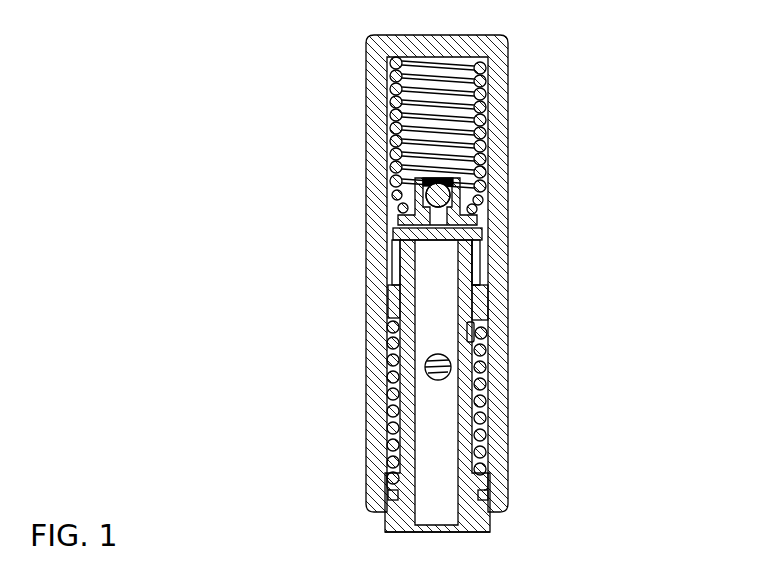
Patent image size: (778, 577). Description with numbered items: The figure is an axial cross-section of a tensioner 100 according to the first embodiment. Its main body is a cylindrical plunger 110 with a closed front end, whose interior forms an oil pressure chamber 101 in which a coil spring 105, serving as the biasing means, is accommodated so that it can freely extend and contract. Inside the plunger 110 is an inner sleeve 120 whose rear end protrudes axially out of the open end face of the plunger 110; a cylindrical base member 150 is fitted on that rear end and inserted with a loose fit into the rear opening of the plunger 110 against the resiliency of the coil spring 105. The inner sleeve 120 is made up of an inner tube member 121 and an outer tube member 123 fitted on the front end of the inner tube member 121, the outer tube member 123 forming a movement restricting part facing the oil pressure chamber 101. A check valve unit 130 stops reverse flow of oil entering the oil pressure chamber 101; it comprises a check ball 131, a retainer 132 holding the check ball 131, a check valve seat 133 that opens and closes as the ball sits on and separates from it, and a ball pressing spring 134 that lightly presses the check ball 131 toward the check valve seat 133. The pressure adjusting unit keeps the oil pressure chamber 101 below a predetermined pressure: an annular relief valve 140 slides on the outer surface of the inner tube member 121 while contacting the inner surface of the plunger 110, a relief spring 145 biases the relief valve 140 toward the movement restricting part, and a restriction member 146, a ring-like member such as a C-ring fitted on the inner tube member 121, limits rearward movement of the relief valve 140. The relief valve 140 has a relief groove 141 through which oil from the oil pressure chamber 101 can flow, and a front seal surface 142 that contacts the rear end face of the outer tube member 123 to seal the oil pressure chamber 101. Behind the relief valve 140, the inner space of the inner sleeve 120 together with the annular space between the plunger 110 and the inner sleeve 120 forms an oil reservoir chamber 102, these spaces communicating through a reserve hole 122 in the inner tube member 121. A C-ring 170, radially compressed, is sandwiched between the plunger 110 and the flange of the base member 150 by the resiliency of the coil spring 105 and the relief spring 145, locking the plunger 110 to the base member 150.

The tensioner 100 is at (346, 70).
The oil pressure chamber 101 is at (404, 148).
The oil reservoir chamber 102 is at (429, 415).
The coil spring 105 is at (487, 99).
The plunger 110 is at (513, 58).
The inner sleeve 120 is at (345, 372).
The inner tube member 121 is at (398, 273).
The reserve hole 122 is at (424, 367).
The outer tube member 123 is at (400, 243).
The check valve unit 130 is at (530, 179).
The check ball 131 is at (451, 188).
The retainer 132 is at (484, 200).
The check valve seat 133 is at (480, 218).
The ball pressing spring 134 is at (460, 176).
The relief valve 140 is at (486, 303).
The relief groove 141 is at (475, 331).
The front seal surface 142 is at (482, 284).
The relief spring 145 is at (485, 381).
The restriction member 146 is at (391, 329).
The base member 150 is at (494, 525).
The C-ring 170 is at (390, 495).